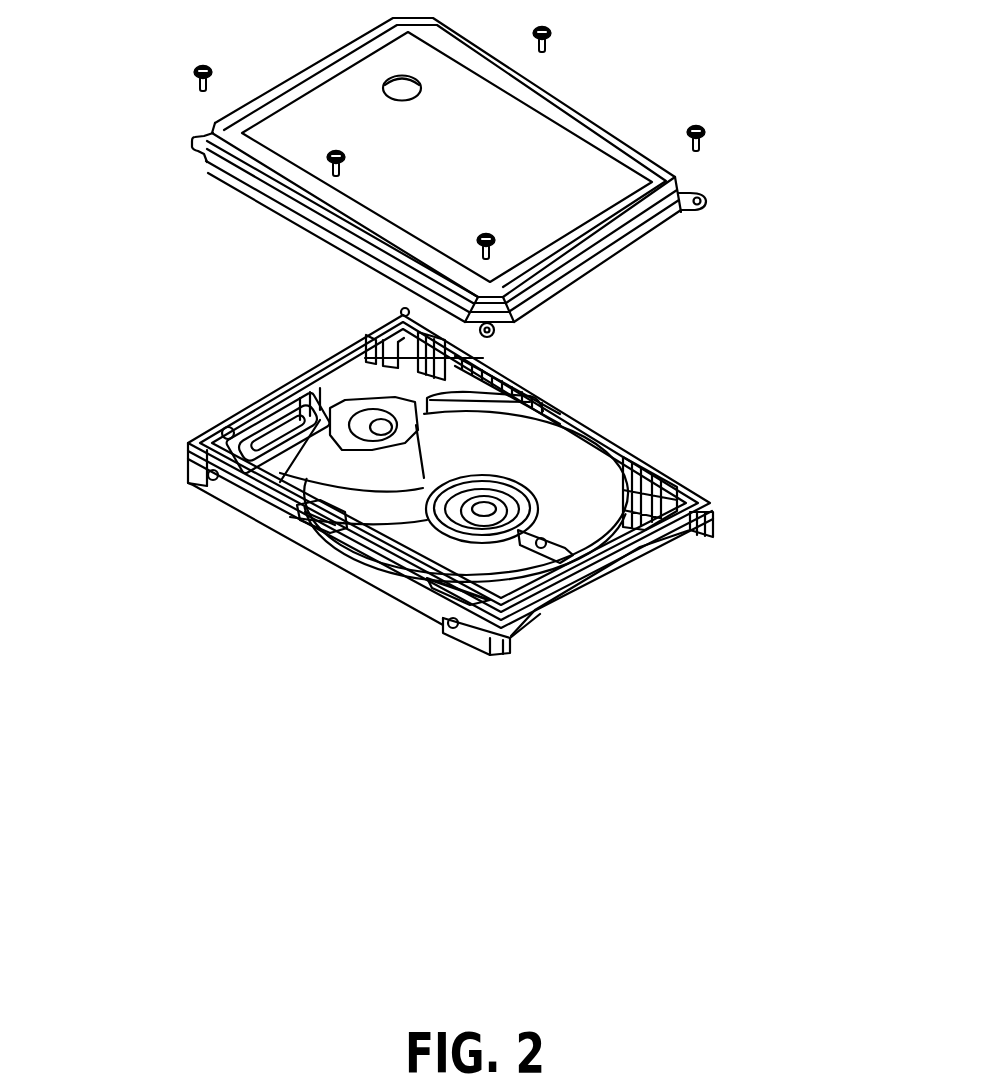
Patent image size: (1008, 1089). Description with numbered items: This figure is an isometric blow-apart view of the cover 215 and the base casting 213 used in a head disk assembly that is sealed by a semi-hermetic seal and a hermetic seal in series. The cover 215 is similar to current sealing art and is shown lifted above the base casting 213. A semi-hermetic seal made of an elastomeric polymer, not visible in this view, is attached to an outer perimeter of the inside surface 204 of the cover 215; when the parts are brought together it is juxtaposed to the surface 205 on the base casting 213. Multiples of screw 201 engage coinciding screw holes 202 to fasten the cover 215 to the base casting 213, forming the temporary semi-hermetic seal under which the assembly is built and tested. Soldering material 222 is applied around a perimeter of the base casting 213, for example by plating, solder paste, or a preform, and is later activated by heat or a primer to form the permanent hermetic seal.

The screw 201 is at (710, 135).
The screw hole 202 is at (192, 143).
The inside surface 204 is at (666, 240).
The surface 205 is at (623, 460).
The base casting 213 is at (380, 578).
The cover 215 is at (548, 155).
The soldering material 222 is at (680, 490).